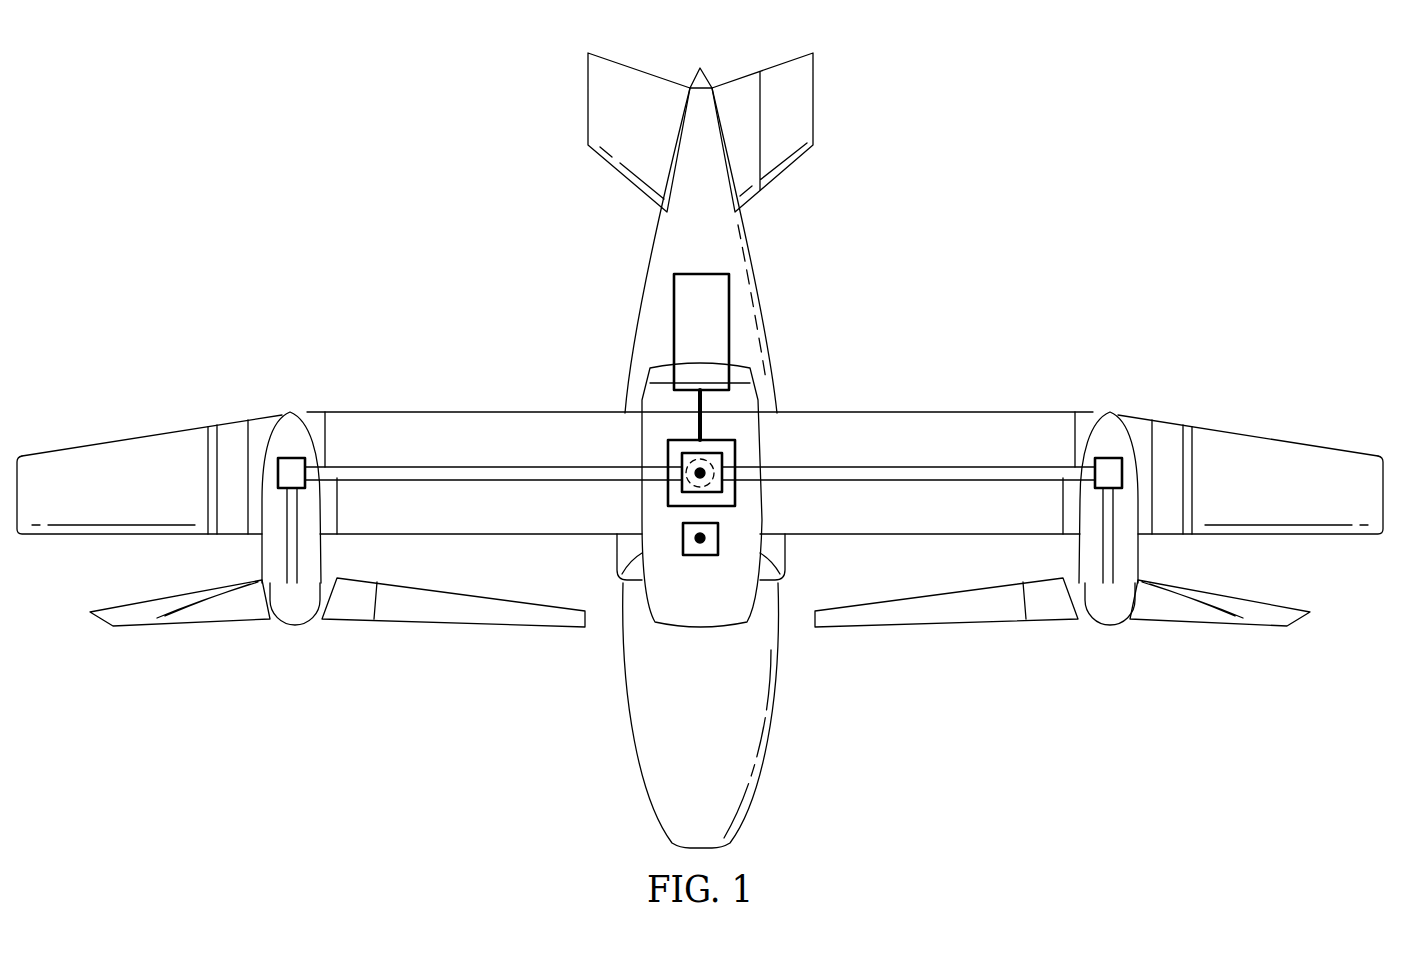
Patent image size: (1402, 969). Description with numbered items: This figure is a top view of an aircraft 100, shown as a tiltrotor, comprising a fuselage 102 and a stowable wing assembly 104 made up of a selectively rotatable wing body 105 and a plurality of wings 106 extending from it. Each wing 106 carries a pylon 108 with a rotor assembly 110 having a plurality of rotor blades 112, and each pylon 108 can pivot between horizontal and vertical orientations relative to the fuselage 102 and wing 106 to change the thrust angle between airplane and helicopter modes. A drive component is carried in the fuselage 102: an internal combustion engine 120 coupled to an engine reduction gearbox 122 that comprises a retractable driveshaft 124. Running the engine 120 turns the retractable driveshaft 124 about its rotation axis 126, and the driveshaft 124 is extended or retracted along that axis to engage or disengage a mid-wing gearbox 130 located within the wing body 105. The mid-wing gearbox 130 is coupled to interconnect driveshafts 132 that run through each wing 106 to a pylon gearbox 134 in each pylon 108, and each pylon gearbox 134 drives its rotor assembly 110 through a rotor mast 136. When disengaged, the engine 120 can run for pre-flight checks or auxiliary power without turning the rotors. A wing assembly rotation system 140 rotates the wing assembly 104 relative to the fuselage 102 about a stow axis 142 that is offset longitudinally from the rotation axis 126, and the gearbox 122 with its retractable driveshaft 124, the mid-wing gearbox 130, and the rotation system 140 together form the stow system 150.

The aircraft 100 is at (1023, 109).
The fuselage 102 is at (628, 717).
The stowable wing assembly 104 is at (413, 413).
The selectively rotatable wing body 105 is at (660, 548).
The wing 106 is at (538, 411).
The pylon 108 is at (262, 552).
The rotor assembly 110 is at (291, 628).
The rotor blade 112 is at (135, 600).
The internal combustion engine 120 is at (729, 310).
The engine reduction gearbox 122 is at (720, 445).
The retractable driveshaft 124 is at (688, 460).
The rotation axis 126 is at (698, 478).
The mid-wing gearbox 130 is at (724, 488).
The interconnect driveshaft 132 is at (490, 481).
The pylon gearbox 134 is at (291, 458).
The rotor mast 136 is at (299, 566).
The wing assembly rotation system 140 is at (692, 556).
The stow axis 142 is at (702, 545).
The stow system 150 is at (748, 447).